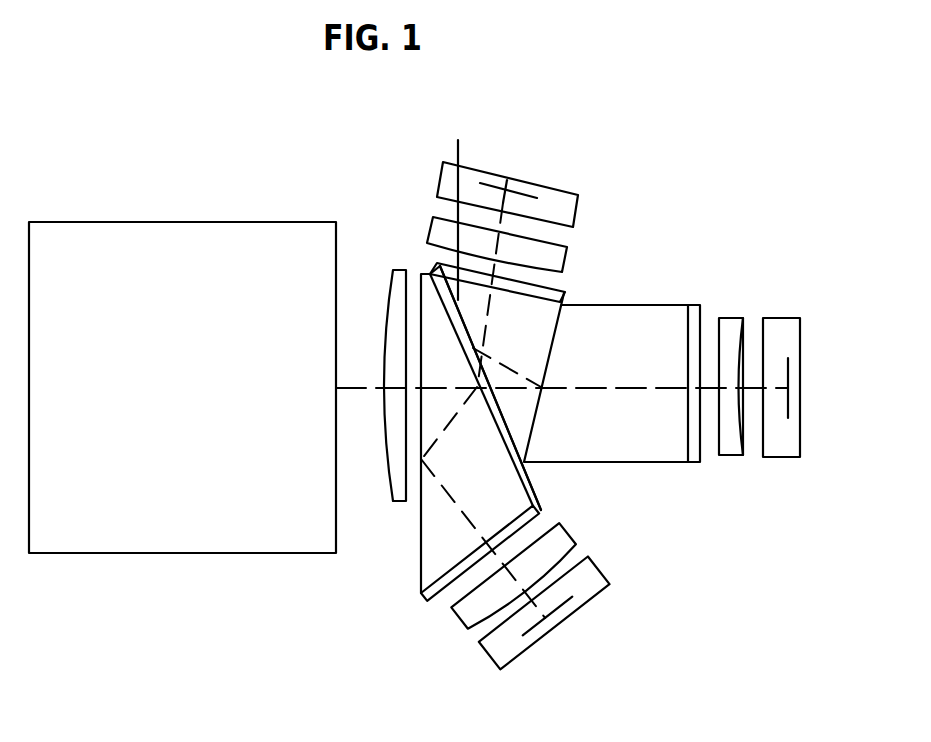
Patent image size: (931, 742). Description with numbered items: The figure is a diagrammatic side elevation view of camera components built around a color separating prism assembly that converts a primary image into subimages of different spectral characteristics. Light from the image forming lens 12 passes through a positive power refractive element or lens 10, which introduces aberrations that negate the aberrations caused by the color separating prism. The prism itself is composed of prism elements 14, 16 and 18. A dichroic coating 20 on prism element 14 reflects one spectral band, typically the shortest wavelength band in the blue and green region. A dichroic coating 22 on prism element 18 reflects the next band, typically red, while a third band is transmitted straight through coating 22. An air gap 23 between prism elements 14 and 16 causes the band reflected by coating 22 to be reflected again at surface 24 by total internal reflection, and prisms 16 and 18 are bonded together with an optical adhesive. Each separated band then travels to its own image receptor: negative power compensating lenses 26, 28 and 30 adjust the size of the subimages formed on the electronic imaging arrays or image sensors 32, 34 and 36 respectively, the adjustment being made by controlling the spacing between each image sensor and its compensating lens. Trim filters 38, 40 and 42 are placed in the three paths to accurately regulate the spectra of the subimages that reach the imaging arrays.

The positive power refractive element 10 is at (386, 300).
The image forming lens 12 is at (258, 553).
The prism element 14 is at (419, 526).
The prism element 16 is at (458, 140).
The prism element 18 is at (663, 333).
The dichroic coating 20 is at (512, 430).
The dichroic coating 22 is at (537, 403).
The air gap 23 is at (432, 274).
The surface 24 is at (460, 320).
The negative power compensating lens 26 is at (567, 260).
The negative power compensating lens 28 is at (733, 455).
The negative power compensating lens 30 is at (463, 627).
The image sensor 32 is at (511, 177).
The image sensor 34 is at (800, 348).
The image sensor 36 is at (590, 603).
The trim filter 38 is at (563, 298).
The trim filter 40 is at (700, 463).
The trim filter 42 is at (423, 603).